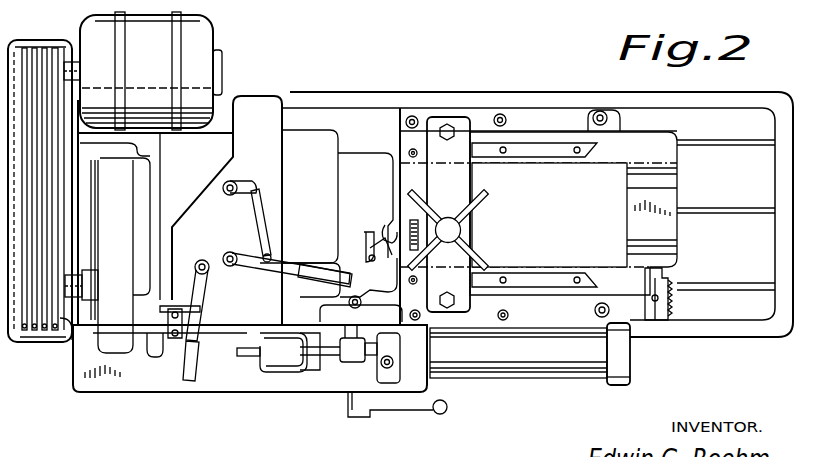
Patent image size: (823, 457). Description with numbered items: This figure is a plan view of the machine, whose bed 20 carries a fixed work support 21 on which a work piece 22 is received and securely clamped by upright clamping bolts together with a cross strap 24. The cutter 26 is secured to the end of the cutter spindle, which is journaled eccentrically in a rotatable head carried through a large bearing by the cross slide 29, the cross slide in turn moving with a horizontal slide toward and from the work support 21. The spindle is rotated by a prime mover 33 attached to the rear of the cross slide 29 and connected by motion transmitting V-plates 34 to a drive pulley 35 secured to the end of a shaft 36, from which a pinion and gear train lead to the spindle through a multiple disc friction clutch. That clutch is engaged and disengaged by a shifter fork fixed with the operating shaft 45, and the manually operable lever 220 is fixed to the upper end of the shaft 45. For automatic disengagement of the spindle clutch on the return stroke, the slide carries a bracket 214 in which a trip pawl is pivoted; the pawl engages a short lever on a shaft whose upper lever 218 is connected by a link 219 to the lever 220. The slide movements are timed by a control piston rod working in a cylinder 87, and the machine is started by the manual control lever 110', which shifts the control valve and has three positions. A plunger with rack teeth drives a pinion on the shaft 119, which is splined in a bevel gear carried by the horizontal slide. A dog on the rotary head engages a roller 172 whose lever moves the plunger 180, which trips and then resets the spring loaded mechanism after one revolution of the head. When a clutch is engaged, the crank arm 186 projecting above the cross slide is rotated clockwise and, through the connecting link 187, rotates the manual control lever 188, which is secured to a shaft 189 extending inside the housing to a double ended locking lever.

The bed 20 is at (574, 86).
The fixed work support 21 is at (668, 252).
The work piece 22 is at (619, 163).
The cross strap 24 is at (463, 190).
The cutter 26 is at (423, 220).
The cross slide 29 is at (263, 99).
The prime mover 33 is at (195, 37).
The V-plates 34 is at (48, 42).
The drive pulley 35 is at (66, 347).
The shaft 36 is at (73, 281).
The operating shaft 45 is at (212, 250).
The cylinder 87 is at (515, 380).
The manual control lever 110' is at (420, 405).
The shaft 119 is at (252, 358).
The roller 172 is at (392, 222).
The plunger 180 is at (372, 230).
The crank arm 186 is at (243, 182).
The connecting link 187 is at (265, 210).
The manual control lever 188 is at (270, 285).
The shaft 189 is at (228, 268).
The bracket 214 is at (156, 358).
The lever 218 is at (176, 340).
The link 219 is at (179, 338).
The manually operable lever 220 is at (199, 362).